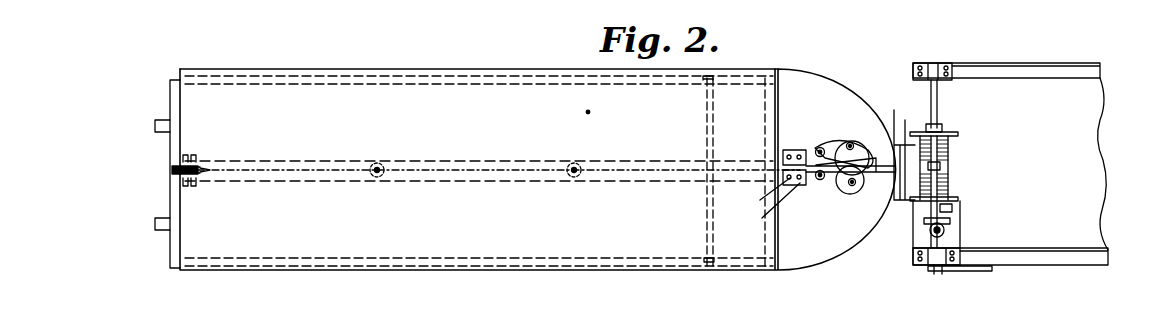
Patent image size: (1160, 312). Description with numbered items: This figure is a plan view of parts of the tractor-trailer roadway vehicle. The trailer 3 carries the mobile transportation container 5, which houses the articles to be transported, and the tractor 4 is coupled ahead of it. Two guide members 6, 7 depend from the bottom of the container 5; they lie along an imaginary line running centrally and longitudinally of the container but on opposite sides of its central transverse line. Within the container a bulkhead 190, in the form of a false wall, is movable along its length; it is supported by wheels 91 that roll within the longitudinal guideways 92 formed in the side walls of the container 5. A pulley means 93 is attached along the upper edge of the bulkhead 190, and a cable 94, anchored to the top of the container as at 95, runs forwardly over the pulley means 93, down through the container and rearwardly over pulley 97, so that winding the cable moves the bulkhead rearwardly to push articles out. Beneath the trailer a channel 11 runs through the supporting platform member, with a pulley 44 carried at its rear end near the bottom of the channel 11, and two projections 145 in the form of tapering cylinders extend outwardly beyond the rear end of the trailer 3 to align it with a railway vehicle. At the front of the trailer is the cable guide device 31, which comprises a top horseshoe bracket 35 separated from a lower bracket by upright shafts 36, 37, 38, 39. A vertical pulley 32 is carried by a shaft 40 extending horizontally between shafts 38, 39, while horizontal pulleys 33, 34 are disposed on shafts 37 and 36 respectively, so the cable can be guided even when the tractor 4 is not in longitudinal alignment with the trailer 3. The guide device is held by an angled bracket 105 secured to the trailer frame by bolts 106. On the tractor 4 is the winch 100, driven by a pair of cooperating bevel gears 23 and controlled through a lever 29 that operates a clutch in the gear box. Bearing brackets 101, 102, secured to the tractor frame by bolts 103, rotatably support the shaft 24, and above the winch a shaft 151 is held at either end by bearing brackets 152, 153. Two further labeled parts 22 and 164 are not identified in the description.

The trailer 3 is at (170, 88).
The tractor 4 is at (1106, 146).
The mobile transportation container 5 is at (256, 70).
The guide member 6 is at (378, 162).
The guide member 7 is at (577, 162).
The channel 11 is at (312, 182).
The spring 22 is at (954, 157).
The bevel gears 23 is at (926, 224).
The shaft 24 is at (938, 110).
The lever 29 is at (962, 272).
The cable guide device 31 is at (838, 124).
The pulley 32 is at (806, 150).
The pulley 33 is at (858, 146).
The pulley 34 is at (857, 188).
The horseshoe bracket 35 is at (890, 160).
The upright shaft 36 is at (850, 194).
The upright shaft 37 is at (849, 142).
The upright shaft 38 is at (818, 180).
The upright shaft 39 is at (820, 147).
The shaft 40 is at (826, 180).
The pulley 44 is at (170, 174).
The wheel 91 is at (706, 80).
The longitudinal guideway 92 is at (482, 77).
The pulley means 93 is at (724, 166).
The cable 94 is at (668, 164).
The cable attachment point 95 is at (203, 168).
The pulley 97 is at (195, 157).
The winch 100 is at (950, 168).
The bearing bracket 101 is at (922, 268).
The bearing bracket 102 is at (946, 64).
The bolts 103 is at (944, 80).
The angled bracket 105 is at (767, 205).
The bolts 106 is at (762, 193).
The projections 145 is at (155, 124).
The shaft 151 is at (952, 186).
The bearing bracket 152 is at (952, 208).
The bearing bracket 153 is at (944, 128).
The flange 164 is at (950, 138).
The bulkhead 190 is at (714, 122).